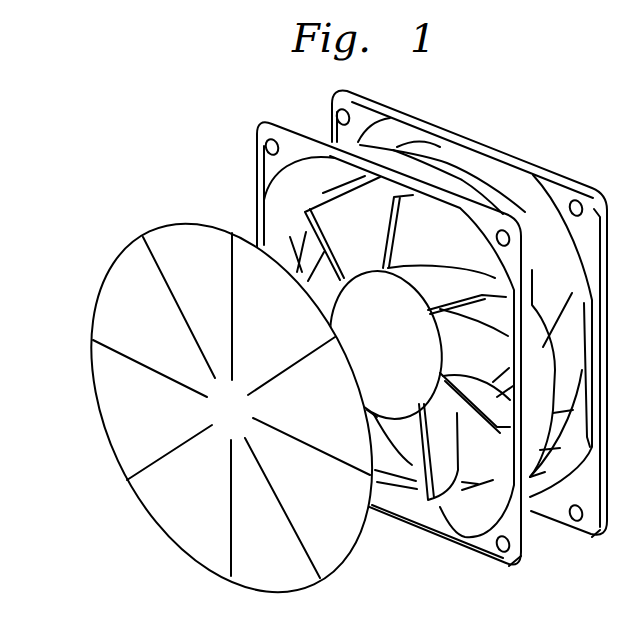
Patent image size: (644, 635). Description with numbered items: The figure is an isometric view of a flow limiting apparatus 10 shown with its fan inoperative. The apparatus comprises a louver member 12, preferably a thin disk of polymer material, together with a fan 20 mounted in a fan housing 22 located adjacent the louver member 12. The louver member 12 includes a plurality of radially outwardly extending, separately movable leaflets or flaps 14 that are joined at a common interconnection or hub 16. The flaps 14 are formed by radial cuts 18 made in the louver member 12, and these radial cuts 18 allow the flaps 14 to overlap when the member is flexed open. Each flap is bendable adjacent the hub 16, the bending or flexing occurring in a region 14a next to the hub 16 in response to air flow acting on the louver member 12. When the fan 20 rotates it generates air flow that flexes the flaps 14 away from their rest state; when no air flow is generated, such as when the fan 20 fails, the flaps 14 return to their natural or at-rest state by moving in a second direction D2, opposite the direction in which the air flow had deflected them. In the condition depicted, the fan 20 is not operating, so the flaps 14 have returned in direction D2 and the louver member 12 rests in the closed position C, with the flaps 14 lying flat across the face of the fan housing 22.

The flow limiting apparatus 10 is at (229, 112).
The louver member 12 is at (97, 446).
The flaps 14 is at (113, 302).
The region 14a is at (183, 360).
The hub 16 is at (227, 408).
The radial cuts 18 is at (158, 258).
The fan 20 is at (426, 226).
The fan housing 22 is at (558, 180).
The closed position C is at (196, 221).
The second direction D2 is at (413, 543).